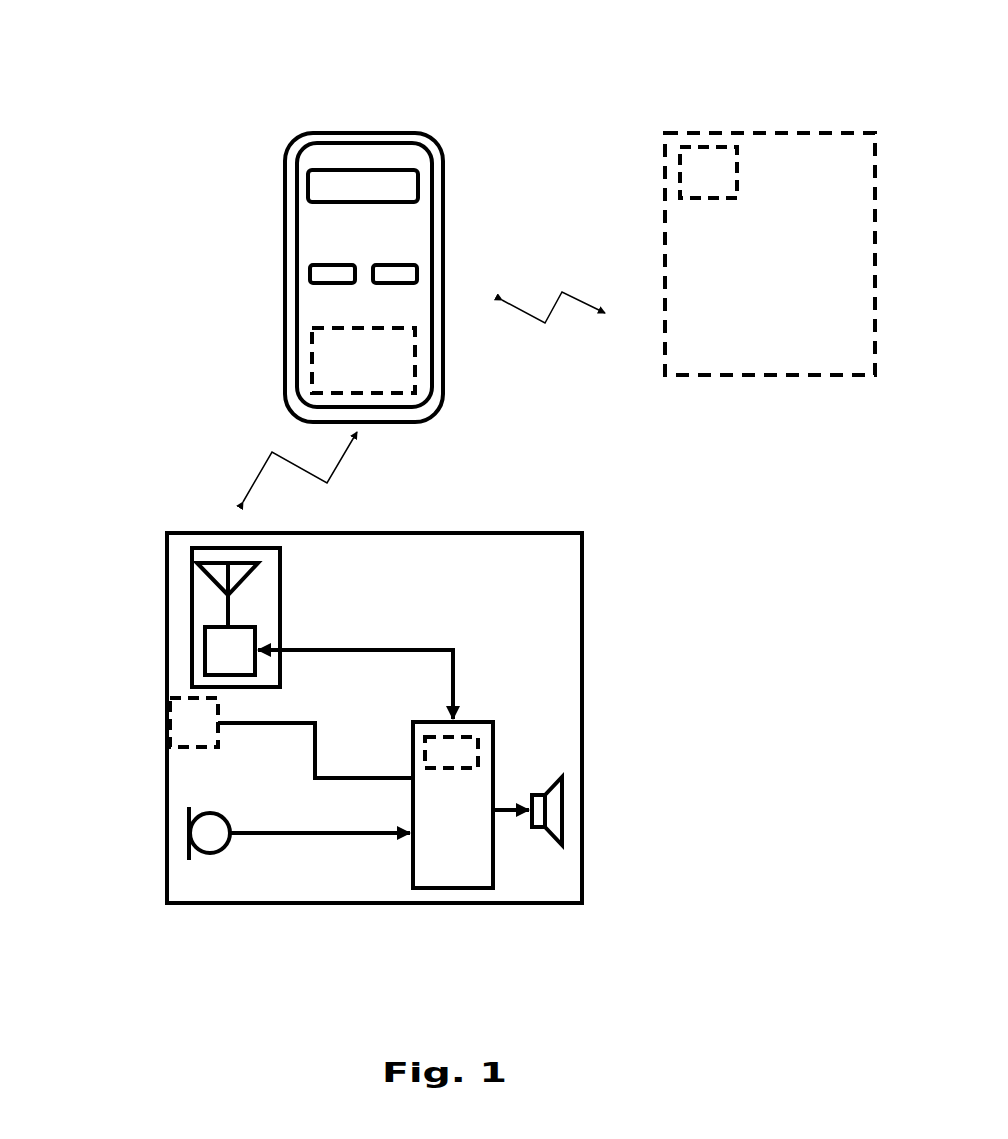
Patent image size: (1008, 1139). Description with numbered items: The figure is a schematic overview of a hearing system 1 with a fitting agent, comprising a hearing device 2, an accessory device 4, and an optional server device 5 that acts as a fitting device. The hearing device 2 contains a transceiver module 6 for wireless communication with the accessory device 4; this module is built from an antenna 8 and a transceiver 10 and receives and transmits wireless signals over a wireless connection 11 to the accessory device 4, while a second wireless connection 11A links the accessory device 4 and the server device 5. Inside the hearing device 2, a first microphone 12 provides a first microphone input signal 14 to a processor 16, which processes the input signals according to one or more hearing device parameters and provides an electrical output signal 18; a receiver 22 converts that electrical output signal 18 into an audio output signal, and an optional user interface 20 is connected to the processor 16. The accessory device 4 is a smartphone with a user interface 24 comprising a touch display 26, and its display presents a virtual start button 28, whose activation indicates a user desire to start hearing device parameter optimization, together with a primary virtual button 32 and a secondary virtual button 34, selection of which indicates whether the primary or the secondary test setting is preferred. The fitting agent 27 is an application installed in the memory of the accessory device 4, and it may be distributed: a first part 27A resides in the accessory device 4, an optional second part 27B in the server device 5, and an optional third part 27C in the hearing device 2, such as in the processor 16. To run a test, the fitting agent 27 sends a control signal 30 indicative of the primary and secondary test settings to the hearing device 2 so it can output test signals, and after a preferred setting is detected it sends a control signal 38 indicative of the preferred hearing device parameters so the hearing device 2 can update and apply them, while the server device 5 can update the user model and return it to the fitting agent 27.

The hearing system 1 is at (112, 180).
The hearing device 2 is at (487, 533).
The accessory device 4 is at (448, 185).
The server device 5 is at (717, 133).
The transceiver module 6 is at (282, 627).
The antenna 8 is at (252, 572).
The transceiver 10 is at (205, 650).
The wireless connection 11 is at (258, 472).
The wireless link 11A is at (552, 307).
The first microphone 12 is at (189, 833).
The first microphone input signal 14 is at (318, 835).
The processor 16 is at (455, 888).
The electrical output signal 18 is at (512, 812).
The user interface 20 is at (170, 707).
The receiver 22 is at (558, 810).
The user interface 24 is at (427, 257).
The touch display 26 is at (352, 285).
The fitting agent 27 is at (312, 349).
The first part 27A is at (363, 360).
The second part 27B is at (682, 175).
The third part 27C is at (460, 737).
The virtual start button 28 is at (310, 188).
The control signal 30 is at (300, 467).
The primary virtual button 32 is at (310, 266).
The secondary virtual button 34 is at (412, 272).
The control signal 38 is at (300, 467).